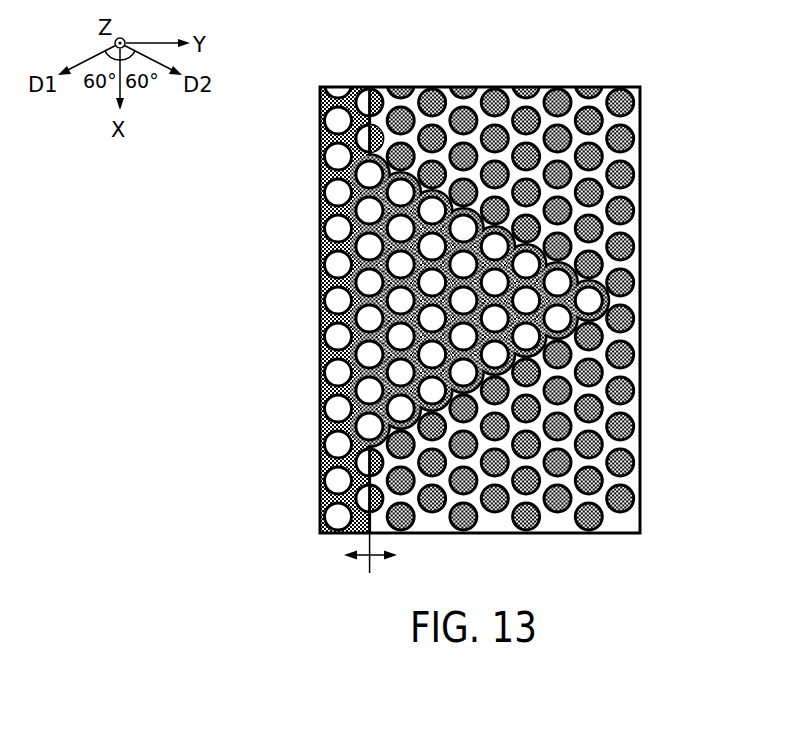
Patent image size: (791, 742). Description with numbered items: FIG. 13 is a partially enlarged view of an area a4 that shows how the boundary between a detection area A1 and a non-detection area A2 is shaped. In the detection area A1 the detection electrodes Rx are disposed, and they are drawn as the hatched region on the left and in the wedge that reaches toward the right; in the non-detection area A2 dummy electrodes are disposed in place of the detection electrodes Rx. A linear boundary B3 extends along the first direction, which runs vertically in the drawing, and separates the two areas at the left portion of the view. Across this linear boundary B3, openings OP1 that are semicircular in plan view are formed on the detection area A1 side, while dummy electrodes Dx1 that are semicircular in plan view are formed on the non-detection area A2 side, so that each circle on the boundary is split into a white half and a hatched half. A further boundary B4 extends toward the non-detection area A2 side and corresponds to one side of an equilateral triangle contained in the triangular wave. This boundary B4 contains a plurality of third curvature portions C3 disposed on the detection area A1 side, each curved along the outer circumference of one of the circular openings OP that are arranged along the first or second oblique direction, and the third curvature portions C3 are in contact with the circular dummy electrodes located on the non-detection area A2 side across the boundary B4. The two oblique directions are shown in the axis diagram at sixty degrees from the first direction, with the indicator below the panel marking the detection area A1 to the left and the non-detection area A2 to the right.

The linear boundary B3 is at (356, 121).
The boundary B4 is at (482, 198).
The third curvature portion C3 is at (413, 173).
The detection electrode Rx is at (322, 101).
The circular opening OP is at (337, 122).
The semicircular opening OP1 is at (362, 140).
The semicircular dummy electrode Dx1 is at (379, 137).
The area a4 is at (641, 95).
The detection area A1 is at (342, 553).
The non-detection area A2 is at (400, 556).